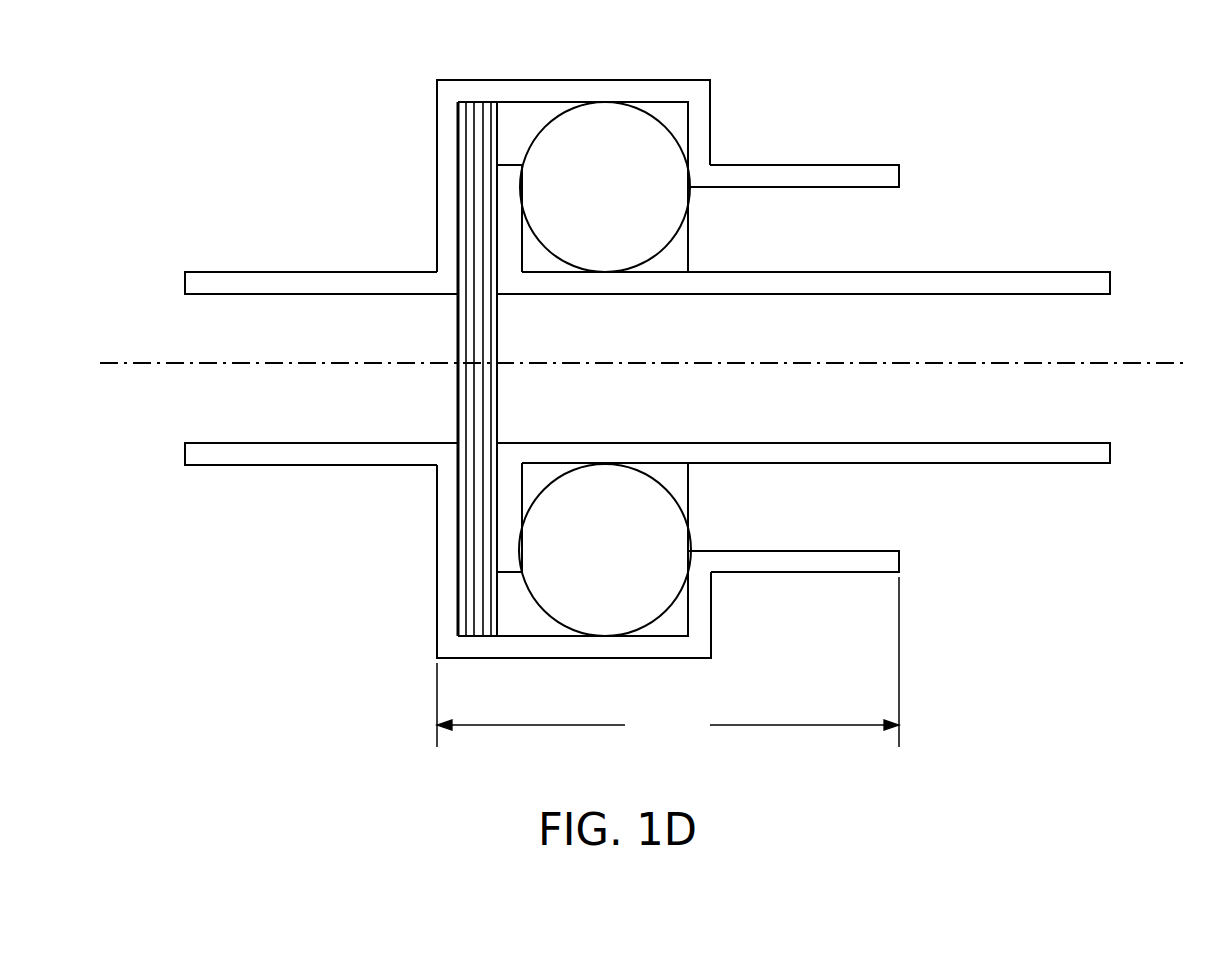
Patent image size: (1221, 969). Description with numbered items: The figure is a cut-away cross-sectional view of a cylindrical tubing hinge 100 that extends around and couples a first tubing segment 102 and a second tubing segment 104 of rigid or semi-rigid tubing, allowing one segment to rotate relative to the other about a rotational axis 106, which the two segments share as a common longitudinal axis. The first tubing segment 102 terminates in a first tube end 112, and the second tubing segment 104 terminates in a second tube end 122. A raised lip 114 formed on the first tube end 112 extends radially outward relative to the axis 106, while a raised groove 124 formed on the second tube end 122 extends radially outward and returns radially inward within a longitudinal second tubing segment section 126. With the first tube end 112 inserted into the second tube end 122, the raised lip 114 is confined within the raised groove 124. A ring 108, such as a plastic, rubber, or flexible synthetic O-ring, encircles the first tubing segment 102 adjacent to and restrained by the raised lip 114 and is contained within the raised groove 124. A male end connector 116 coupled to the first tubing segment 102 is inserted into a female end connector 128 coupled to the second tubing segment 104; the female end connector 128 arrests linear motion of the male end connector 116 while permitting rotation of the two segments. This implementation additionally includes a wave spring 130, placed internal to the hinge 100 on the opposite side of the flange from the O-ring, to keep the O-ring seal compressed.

The cylindrical tubing hinge 100 is at (500, 92).
The first tubing segment 102 is at (1028, 455).
The second tubing segment 104 is at (262, 282).
The rotational axis 106 is at (1155, 365).
The ring 108 is at (680, 228).
The first tube end 112 is at (552, 452).
The raised lip 114 is at (505, 188).
The male end connector 116 is at (530, 283).
The second tube end 122 is at (795, 558).
The raised groove 124 is at (507, 647).
The longitudinal second tubing segment section 126 is at (668, 662).
The female end connector 128 is at (768, 178).
The wave spring 130 is at (470, 400).